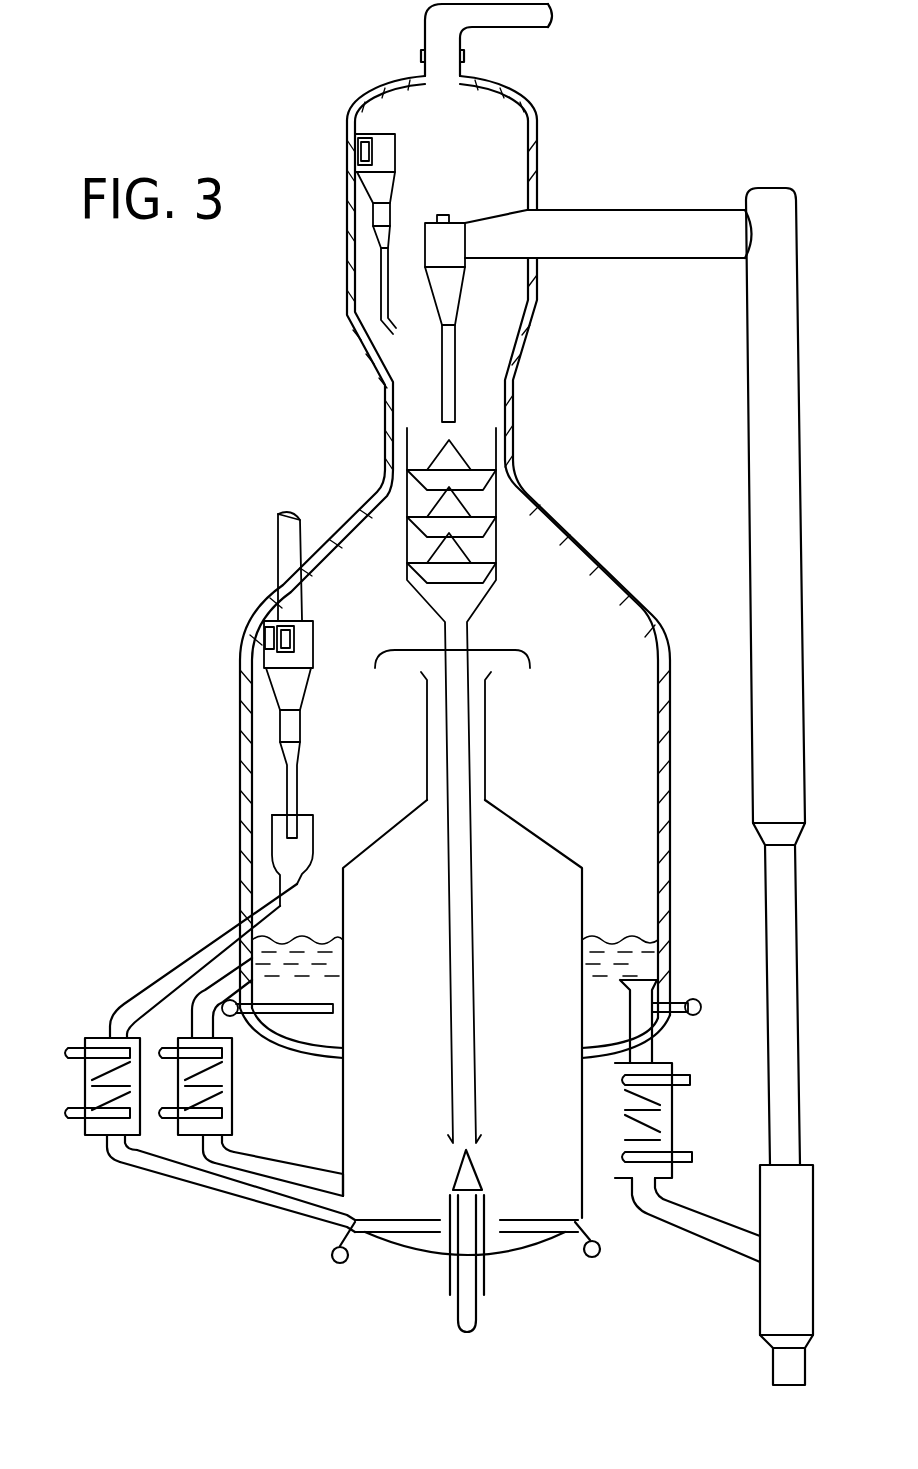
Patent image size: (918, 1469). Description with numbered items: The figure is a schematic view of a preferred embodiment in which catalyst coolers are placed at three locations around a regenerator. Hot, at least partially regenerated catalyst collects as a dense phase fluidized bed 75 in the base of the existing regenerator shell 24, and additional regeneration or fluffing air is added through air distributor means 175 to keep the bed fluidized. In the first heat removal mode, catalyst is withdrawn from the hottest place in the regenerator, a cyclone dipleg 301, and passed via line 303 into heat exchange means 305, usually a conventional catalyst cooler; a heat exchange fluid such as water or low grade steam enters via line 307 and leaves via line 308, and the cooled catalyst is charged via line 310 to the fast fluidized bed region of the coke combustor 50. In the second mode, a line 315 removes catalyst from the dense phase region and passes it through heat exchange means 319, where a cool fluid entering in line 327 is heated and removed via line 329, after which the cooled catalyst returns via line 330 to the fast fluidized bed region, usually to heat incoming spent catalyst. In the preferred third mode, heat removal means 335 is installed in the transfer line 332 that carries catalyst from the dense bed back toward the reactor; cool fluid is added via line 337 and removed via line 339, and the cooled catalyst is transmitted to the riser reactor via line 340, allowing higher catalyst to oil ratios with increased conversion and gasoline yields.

The regenerator shell 24 is at (672, 766).
The coke combustor 50 is at (405, 1260).
The dense phase fluidized bed 75 is at (314, 998).
The air distributor means 175 is at (695, 999).
The dipleg 301 is at (284, 790).
The line 303 is at (188, 960).
The heat exchange means 305 is at (76, 1081).
The line 307 is at (78, 1120).
The line 308 is at (78, 1048).
The line 310 is at (242, 1200).
The line 315 is at (243, 1035).
The heat exchange means 319 is at (236, 1082).
The line 327 is at (232, 1124).
The line 329 is at (227, 1083).
The line 330 is at (316, 1166).
The transfer line 332 is at (660, 1048).
The heat removal means 335 is at (684, 1131).
The line 337 is at (680, 1166).
The line 339 is at (688, 1078).
The line 340 is at (652, 1216).